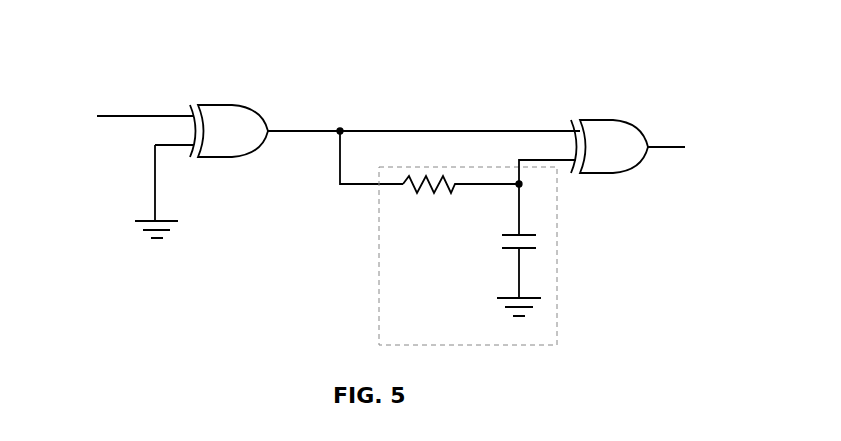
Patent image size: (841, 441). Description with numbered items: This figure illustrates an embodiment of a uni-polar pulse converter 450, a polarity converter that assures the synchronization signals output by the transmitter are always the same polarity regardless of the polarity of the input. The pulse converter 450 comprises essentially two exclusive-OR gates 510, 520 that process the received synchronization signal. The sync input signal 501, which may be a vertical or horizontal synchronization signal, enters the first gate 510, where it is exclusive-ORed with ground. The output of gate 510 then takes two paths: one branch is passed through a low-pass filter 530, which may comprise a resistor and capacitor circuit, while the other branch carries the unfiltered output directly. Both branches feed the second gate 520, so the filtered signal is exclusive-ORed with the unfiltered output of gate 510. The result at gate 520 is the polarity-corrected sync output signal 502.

The uni-polar pulse converter 450 is at (90, 38).
The sync input signal 501 is at (70, 91).
The sync output signal 502 is at (699, 122).
The exclusive-OR gate 510 is at (235, 105).
The exclusive-OR gate 520 is at (608, 120).
The low-pass filter 530 is at (390, 278).